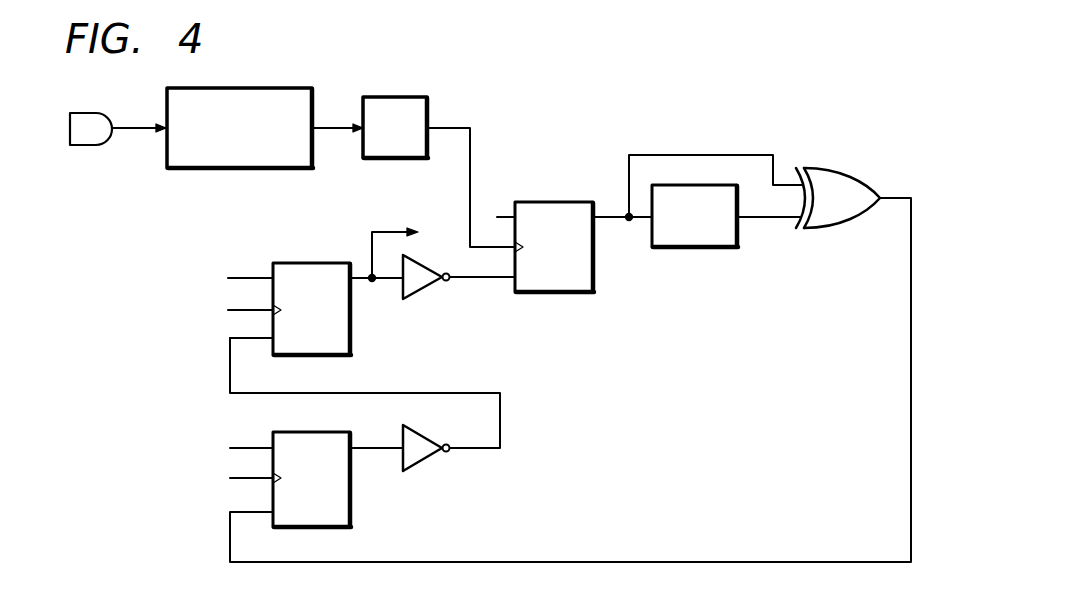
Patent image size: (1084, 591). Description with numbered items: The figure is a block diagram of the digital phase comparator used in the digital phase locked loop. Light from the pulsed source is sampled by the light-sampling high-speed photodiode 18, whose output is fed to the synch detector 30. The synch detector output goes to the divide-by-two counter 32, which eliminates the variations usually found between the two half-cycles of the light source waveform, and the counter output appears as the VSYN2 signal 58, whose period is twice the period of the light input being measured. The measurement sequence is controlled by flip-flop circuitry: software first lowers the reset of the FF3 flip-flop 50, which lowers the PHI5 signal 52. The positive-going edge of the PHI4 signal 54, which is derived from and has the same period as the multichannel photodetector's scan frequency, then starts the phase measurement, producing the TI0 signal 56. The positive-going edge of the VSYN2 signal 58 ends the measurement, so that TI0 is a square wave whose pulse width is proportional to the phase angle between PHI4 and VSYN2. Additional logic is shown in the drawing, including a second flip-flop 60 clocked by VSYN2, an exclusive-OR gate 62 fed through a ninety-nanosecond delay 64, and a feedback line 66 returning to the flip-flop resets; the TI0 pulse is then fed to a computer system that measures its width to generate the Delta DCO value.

The light-sampling high-speed photodiode 18 is at (83, 145).
The synch detector 30 is at (220, 168).
The Divide-by-2 counter 32 is at (388, 158).
The VSYN2 signal 58 is at (448, 128).
The PHI4 signal 54 is at (250, 310).
The TI0 signal 56 is at (470, 277).
The second flip-flop 60 is at (560, 292).
The exclusive-OR gate 62 is at (818, 168).
The 90 ns delay 64 is at (690, 247).
The FF3 flip-flop 50 is at (350, 483).
The PHI5 signal 52 is at (500, 420).
The feedback reset line 66 is at (493, 562).